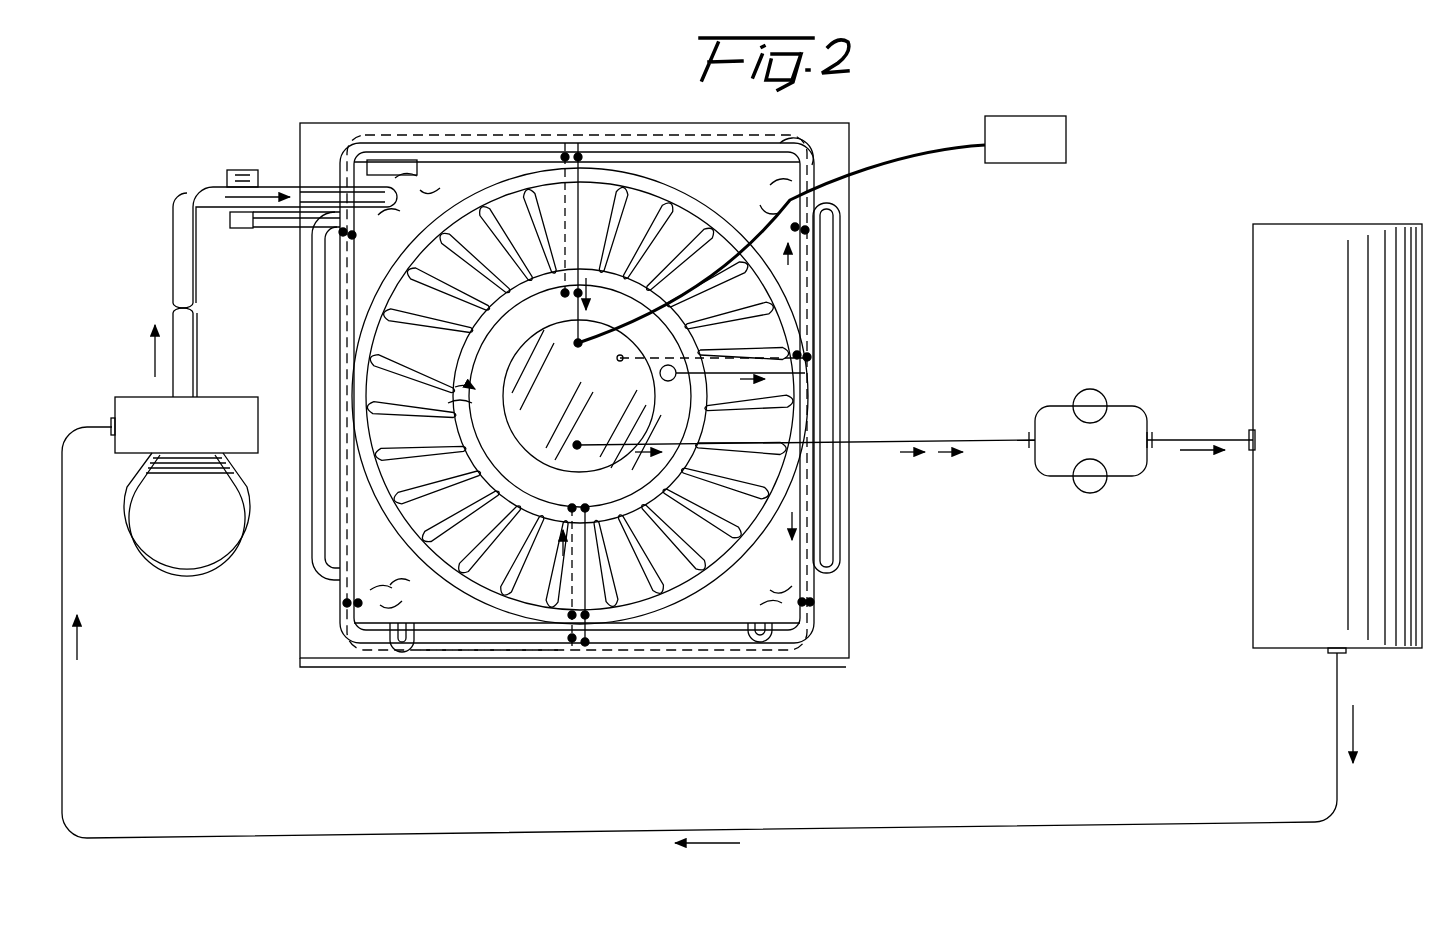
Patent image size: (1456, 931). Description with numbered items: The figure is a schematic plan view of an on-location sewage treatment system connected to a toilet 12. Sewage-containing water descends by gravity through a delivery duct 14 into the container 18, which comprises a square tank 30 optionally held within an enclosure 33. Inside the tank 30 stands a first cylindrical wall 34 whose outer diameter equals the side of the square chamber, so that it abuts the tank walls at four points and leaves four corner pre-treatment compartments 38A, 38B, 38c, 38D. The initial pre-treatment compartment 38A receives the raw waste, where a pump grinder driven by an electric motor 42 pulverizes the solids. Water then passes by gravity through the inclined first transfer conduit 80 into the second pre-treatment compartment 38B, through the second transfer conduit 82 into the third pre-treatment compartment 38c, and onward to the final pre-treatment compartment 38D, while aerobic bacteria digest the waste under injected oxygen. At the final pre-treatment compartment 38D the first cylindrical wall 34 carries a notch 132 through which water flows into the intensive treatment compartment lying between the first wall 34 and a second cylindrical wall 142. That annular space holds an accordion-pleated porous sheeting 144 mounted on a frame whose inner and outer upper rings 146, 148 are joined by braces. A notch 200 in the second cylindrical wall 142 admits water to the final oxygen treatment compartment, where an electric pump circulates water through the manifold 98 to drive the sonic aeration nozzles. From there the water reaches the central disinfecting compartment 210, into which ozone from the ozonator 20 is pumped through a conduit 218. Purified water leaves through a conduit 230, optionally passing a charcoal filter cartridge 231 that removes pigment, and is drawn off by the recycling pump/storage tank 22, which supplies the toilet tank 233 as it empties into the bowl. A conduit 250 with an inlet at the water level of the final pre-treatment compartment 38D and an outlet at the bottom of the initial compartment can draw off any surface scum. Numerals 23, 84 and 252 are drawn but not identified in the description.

The toilet 12 is at (133, 557).
The delivery duct 14 is at (167, 317).
The container 18 is at (477, 632).
The ozonator 20 is at (1068, 116).
The recycling pump/storage tank 22 is at (1250, 576).
The valve 23 is at (1105, 393).
The tank 30 is at (826, 610).
The enclosure 33 is at (296, 642).
The first cylindrical wall 34 is at (638, 172).
The initial pre-treatment compartment 38A is at (462, 172).
The second pre-treatment compartment 38B is at (380, 612).
The third pre-treatment compartment 38c is at (755, 587).
The final pre-treatment compartment 38D is at (690, 172).
The electric motor 42 is at (250, 166).
The first gravity-flow transfer conduit 80 is at (318, 572).
The second transfer conduit 82 is at (520, 656).
The right side lamp tube 84 is at (830, 575).
The manifold 98 is at (810, 391).
The notch 132 is at (802, 232).
The second cylindrical wall 142 is at (628, 560).
The porous sheeting 144 is at (758, 322).
The inner upper ring 146 is at (563, 170).
The outer upper ring 148 is at (581, 175).
The notch 200 is at (462, 392).
The disinfecting compartment 210 is at (547, 462).
The conduit 218 is at (860, 178).
The conduit 230 is at (856, 438).
The charcoal filter cartridge 231 is at (1103, 487).
The toilet tank 233 is at (215, 397).
The conduit 250 is at (782, 147).
The bracket 252 is at (376, 162).